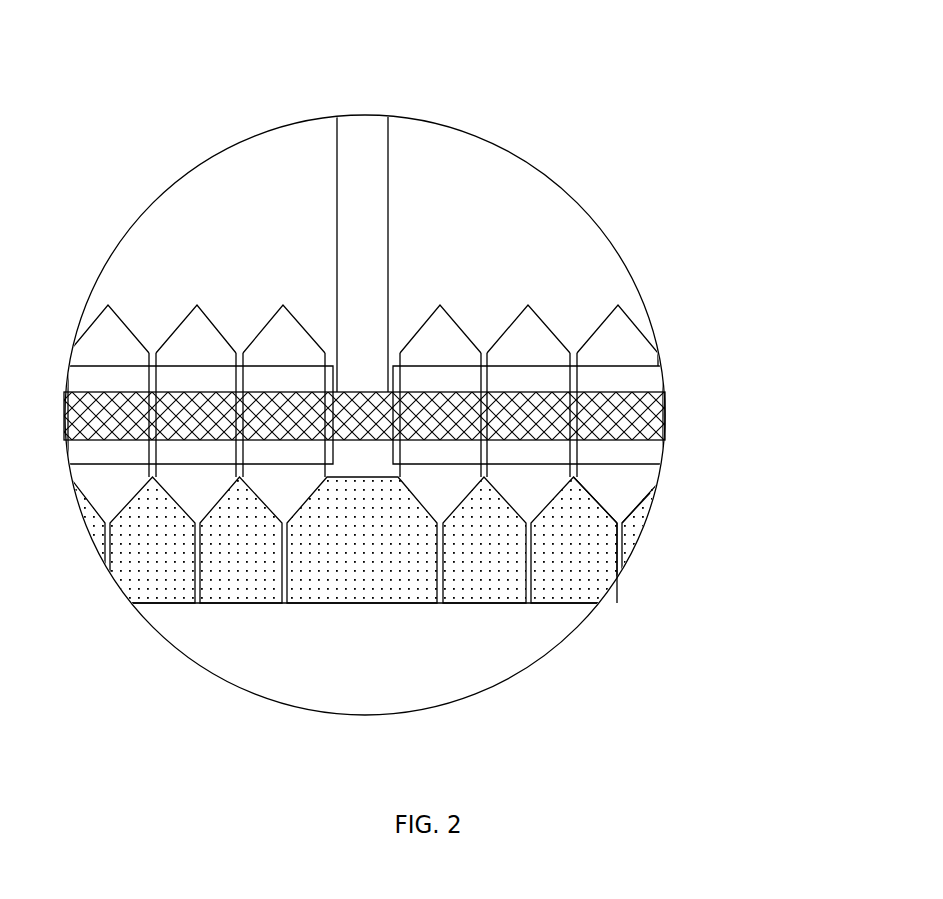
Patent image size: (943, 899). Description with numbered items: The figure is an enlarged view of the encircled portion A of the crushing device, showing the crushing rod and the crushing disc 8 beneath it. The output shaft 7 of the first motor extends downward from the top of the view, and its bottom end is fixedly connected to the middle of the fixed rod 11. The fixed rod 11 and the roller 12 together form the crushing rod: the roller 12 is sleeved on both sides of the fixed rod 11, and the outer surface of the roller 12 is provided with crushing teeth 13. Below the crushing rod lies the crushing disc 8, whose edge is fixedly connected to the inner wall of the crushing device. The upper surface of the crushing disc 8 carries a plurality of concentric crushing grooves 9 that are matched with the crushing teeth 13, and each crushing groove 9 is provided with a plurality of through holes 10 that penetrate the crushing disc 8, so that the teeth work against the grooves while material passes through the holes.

The output shaft 7 is at (368, 223).
The portion A is at (566, 193).
The roller 12 is at (628, 377).
The fixed rod 11 is at (662, 413).
The crushing teeth 13 is at (628, 480).
The crushing grooves 9 is at (620, 523).
The through holes 10 is at (620, 560).
The crushing disc 8 is at (148, 573).